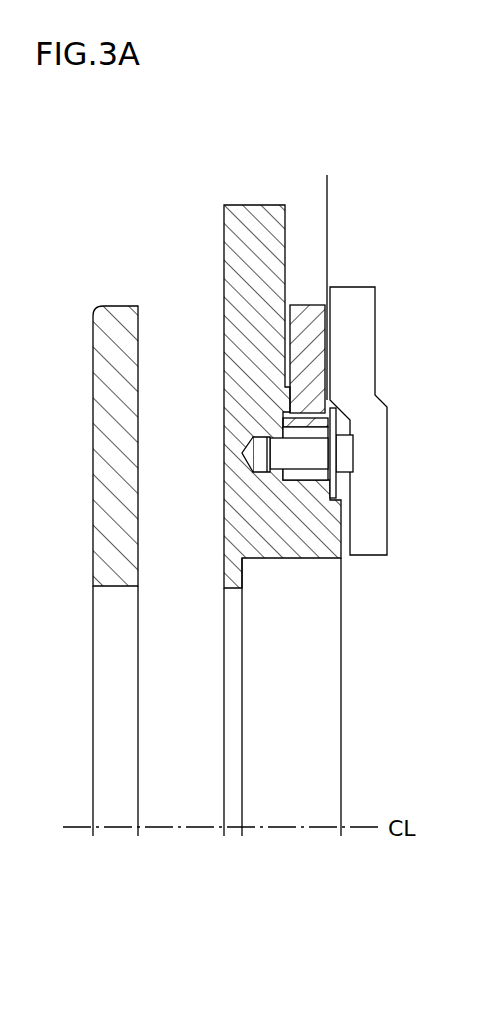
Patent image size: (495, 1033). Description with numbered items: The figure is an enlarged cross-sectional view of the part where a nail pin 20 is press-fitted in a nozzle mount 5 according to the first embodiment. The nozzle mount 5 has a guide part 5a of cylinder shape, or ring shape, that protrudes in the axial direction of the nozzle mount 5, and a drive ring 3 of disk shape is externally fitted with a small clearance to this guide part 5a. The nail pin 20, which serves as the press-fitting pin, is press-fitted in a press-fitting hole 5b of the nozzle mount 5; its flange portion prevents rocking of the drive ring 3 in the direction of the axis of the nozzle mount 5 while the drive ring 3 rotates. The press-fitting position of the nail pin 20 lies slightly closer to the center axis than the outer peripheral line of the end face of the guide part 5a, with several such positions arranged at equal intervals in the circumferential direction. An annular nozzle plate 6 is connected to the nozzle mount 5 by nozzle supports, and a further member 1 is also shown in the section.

The bracket 1 is at (375, 313).
The drive ring 3 is at (305, 305).
The nozzle mount 5 is at (254, 205).
The guide part 5a is at (309, 413).
The press-fitting hole 5b is at (260, 448).
The nozzle plate 6 is at (120, 325).
The nail pin 20 is at (355, 454).